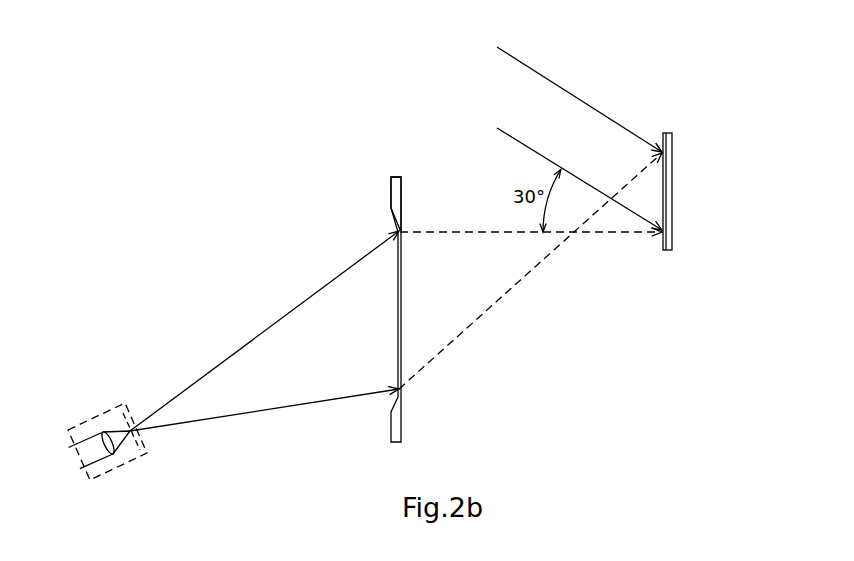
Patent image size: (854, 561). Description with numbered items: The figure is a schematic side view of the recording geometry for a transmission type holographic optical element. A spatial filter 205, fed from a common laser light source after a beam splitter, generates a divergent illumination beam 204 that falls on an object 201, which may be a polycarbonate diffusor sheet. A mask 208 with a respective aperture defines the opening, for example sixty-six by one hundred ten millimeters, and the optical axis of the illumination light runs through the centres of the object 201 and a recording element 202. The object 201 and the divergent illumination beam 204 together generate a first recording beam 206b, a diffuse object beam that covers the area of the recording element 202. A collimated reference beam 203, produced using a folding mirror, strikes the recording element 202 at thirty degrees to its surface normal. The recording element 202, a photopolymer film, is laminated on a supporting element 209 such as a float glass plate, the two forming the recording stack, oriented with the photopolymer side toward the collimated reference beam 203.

The object 201 is at (398, 324).
The recording element 202 is at (670, 198).
The collimated reference beam 203 is at (607, 116).
The divergent illumination beam 204 is at (247, 343).
The spatial filter 205 is at (103, 416).
The first recording beam 206b is at (478, 332).
The mask 208 is at (390, 194).
The supporting element 209 is at (673, 170).